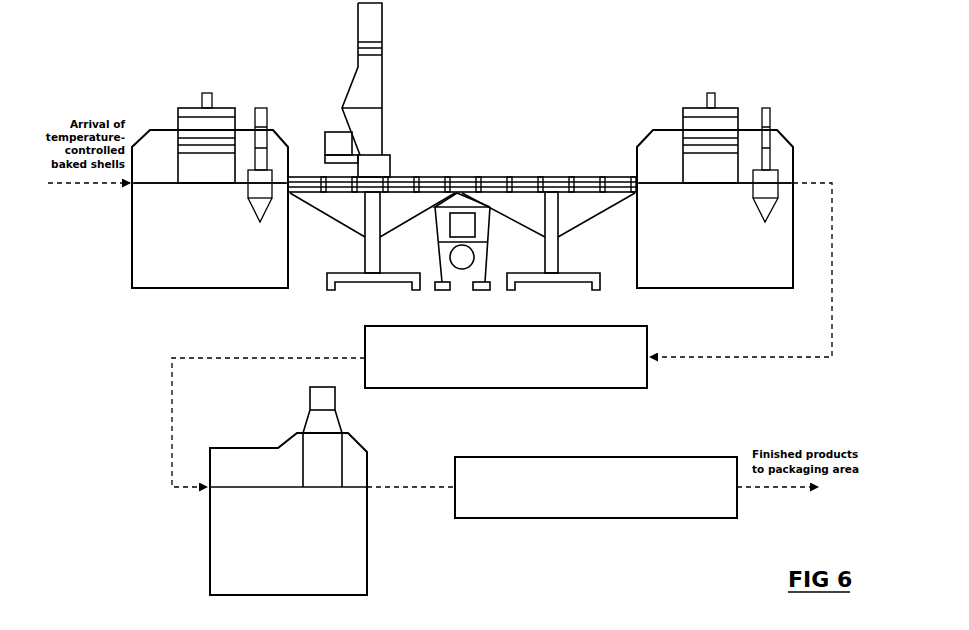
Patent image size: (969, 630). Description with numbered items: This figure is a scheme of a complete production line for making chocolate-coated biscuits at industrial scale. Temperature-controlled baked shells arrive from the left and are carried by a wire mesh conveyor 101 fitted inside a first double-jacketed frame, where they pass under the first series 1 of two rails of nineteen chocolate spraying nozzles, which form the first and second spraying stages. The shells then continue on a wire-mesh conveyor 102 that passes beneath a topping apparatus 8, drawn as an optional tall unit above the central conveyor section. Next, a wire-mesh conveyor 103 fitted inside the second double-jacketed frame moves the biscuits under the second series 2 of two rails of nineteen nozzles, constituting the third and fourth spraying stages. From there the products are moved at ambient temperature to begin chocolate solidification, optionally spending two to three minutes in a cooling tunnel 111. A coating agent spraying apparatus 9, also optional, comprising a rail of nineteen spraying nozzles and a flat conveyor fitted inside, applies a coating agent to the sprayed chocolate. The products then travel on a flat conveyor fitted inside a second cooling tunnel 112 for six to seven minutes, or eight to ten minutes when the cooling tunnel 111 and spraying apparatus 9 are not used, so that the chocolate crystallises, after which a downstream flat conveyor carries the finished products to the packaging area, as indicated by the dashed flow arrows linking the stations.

The first series of spraying nozzle rails 1 is at (152, 112).
The second series of spraying nozzle rails 2 is at (786, 112).
The topping apparatus 8 is at (394, 112).
The coating agent spraying apparatus 9 is at (332, 463).
The wire mesh conveyor 101 is at (152, 185).
The wire-mesh conveyor 102 is at (493, 181).
The wire-mesh conveyor 103 is at (662, 185).
The cooling tunnel 111 is at (602, 378).
The second cooling tunnel 112 is at (552, 502).